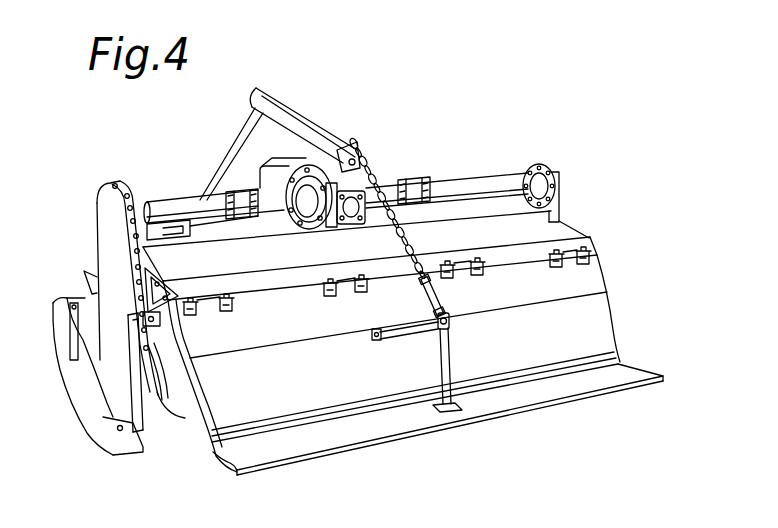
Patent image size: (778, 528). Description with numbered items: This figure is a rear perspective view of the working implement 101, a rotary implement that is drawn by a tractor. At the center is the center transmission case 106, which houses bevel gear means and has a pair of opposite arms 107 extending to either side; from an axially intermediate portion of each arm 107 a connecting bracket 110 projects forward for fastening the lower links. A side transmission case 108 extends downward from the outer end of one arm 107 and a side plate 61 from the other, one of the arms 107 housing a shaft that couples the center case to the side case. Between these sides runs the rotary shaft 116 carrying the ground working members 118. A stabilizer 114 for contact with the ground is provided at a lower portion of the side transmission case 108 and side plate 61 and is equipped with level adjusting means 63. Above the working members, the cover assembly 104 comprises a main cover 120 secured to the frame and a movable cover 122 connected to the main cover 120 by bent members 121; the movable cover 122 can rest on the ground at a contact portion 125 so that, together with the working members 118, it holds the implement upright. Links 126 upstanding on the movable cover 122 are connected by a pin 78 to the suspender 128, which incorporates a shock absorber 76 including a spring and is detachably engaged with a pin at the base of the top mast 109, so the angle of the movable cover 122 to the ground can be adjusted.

The working implement 101 is at (409, 135).
The cover assembly 104 is at (548, 236).
The center transmission case 106 is at (303, 228).
The arms 107 is at (174, 203).
The side transmission case 108 is at (100, 252).
The top mast 109 is at (318, 128).
The connecting bracket 110 is at (417, 182).
The stabilizer 114 is at (48, 302).
The rotary shaft 116 is at (200, 338).
The ground working members 118 is at (200, 383).
The main cover 120 is at (503, 220).
The bent members 121 is at (322, 283).
The movable cover 122 is at (613, 287).
The contact portion 125 is at (215, 457).
The links 126 is at (440, 366).
The suspender 128 is at (407, 246).
The side plate 61 is at (558, 201).
The level adjusting means 63 is at (150, 410).
The shock absorber 76 is at (437, 300).
The pin 78 is at (450, 320).